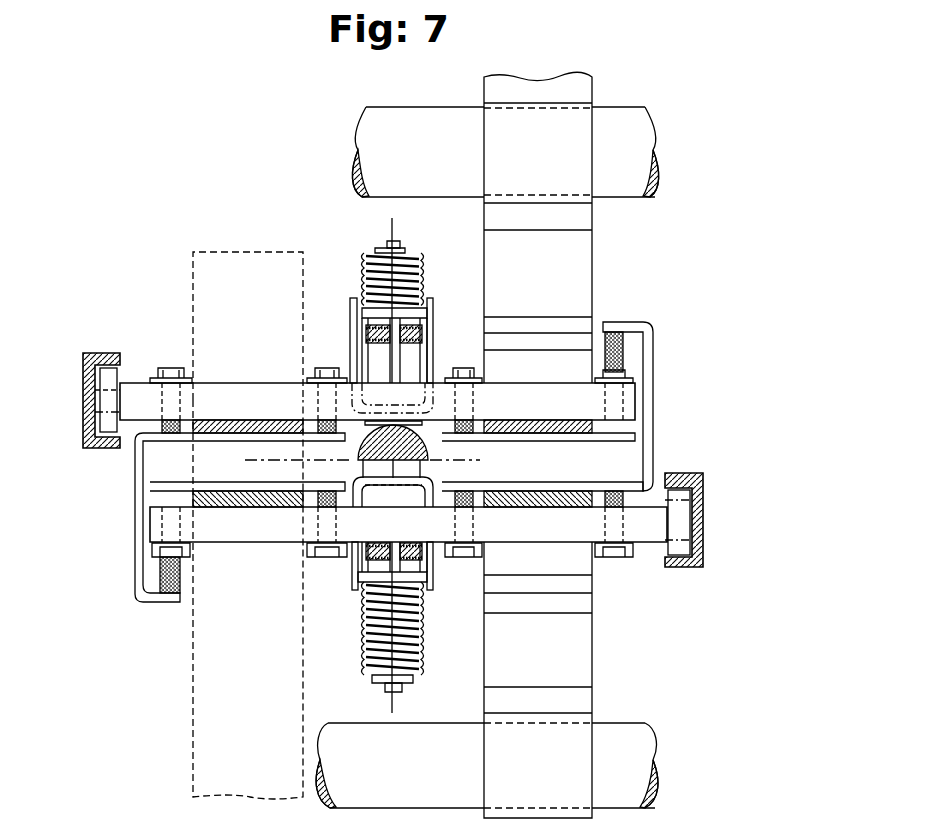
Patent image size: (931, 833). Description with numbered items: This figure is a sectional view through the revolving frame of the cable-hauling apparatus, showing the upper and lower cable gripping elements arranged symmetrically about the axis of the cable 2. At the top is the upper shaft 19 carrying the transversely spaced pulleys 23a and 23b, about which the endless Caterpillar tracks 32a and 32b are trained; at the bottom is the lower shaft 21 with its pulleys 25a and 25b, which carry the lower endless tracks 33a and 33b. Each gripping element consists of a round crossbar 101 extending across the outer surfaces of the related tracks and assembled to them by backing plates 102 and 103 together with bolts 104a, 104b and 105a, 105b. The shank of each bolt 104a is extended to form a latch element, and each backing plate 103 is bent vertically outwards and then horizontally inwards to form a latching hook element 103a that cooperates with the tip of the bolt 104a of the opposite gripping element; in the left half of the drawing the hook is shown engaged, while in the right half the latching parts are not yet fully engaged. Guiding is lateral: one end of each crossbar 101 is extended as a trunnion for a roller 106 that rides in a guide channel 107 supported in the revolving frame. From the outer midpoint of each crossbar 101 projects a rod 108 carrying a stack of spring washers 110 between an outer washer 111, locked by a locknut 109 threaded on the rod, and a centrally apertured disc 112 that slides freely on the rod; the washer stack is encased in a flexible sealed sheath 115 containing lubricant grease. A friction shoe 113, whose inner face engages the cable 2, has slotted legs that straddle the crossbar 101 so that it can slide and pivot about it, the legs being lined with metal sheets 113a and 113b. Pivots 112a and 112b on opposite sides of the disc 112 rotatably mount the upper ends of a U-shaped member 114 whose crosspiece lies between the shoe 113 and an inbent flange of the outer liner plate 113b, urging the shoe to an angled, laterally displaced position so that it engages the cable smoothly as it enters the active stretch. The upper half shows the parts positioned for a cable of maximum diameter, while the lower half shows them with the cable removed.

The cable 2 is at (362, 448).
The upper shaft 19 is at (385, 118).
The lower shaft 21 is at (442, 803).
The pulley 23a is at (590, 280).
The pulley 23b is at (300, 265).
The pulley 25a is at (592, 655).
The pulley 25b is at (205, 662).
The endless Caterpillar track 32a is at (580, 435).
The endless Caterpillar track 32b is at (238, 419).
The endless track 33a is at (546, 507).
The endless track 33b is at (300, 508).
The round crossbar 101 is at (276, 398).
The backing plate 102 is at (548, 438).
The backing plate 103 is at (248, 437).
The latching hook element 103a is at (152, 603).
The bolt 104a is at (622, 355).
The bolt 104b is at (460, 372).
The bolt 105a is at (165, 370).
The bolt 105b is at (328, 369).
The roller 106 is at (110, 428).
The guide channel 107 is at (108, 353).
The rod 108 is at (392, 348).
The locknut 109 is at (390, 242).
The stack of spring washers 110 is at (370, 268).
The outer washer 111 is at (402, 254).
The centrally apertured disc 112 is at (362, 306).
The pivot 112a is at (433, 320).
The pivot 112b is at (352, 318).
The friction shoe 113 is at (367, 335).
The metal sheet liner 113a is at (405, 343).
The outer liner plate 113b is at (420, 318).
The U-shaped member 114 is at (432, 340).
The flexible sealed sheath 115 is at (422, 263).